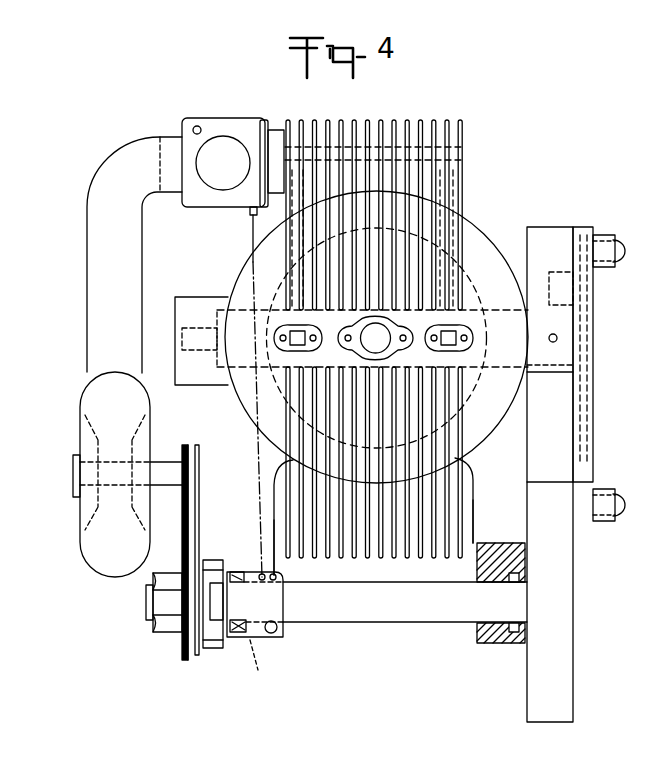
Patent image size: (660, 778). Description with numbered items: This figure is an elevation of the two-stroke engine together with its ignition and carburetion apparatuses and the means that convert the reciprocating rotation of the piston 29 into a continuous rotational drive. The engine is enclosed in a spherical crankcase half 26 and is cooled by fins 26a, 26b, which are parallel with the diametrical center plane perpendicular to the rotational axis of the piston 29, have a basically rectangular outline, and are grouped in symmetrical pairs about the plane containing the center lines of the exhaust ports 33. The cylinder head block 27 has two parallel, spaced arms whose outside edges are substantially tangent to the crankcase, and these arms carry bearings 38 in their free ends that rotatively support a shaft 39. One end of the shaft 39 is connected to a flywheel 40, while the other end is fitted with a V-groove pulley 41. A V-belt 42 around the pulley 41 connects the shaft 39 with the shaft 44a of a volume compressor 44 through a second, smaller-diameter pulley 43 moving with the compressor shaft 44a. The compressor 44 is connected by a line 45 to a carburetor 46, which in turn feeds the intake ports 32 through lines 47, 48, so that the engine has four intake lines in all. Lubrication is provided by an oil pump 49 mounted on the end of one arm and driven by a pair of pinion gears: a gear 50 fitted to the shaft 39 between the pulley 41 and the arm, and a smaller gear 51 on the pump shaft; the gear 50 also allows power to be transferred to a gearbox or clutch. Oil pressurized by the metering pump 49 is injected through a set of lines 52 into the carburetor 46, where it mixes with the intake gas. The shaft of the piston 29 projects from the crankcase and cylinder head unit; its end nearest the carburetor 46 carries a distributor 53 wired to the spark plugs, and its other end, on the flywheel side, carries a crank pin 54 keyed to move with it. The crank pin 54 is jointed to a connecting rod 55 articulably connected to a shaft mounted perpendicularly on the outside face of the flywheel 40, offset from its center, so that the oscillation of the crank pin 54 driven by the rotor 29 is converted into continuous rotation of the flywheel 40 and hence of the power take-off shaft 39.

The spherical crankcase half 26 is at (480, 428).
The cooling fin 26a is at (409, 120).
The cooling fin 26b is at (345, 560).
The cylinder head block 27 is at (498, 512).
The piston 29 is at (462, 312).
The intake port 32 is at (302, 344).
The exhaust port 33 is at (375, 338).
The bearing 38 is at (515, 640).
The shaft 39 is at (380, 604).
The flywheel 40 is at (560, 658).
The V-groove pulley 41 is at (178, 650).
The V-belt 42 is at (190, 543).
The second pulley 43 is at (196, 447).
The volume compressor 44 is at (85, 545).
The compressor shaft 44a is at (158, 462).
The line 45 is at (87, 248).
The carburetor 46 is at (212, 120).
The intake line 47 is at (250, 232).
The intake line 48 is at (452, 182).
The oil pump 49 is at (265, 634).
The pinion gear 50 is at (214, 658).
The pinion gear 51 is at (217, 618).
The oil line 52 is at (262, 486).
The distributor 53 is at (190, 303).
The crank pin 54 is at (548, 234).
The connecting rod 55 is at (593, 436).